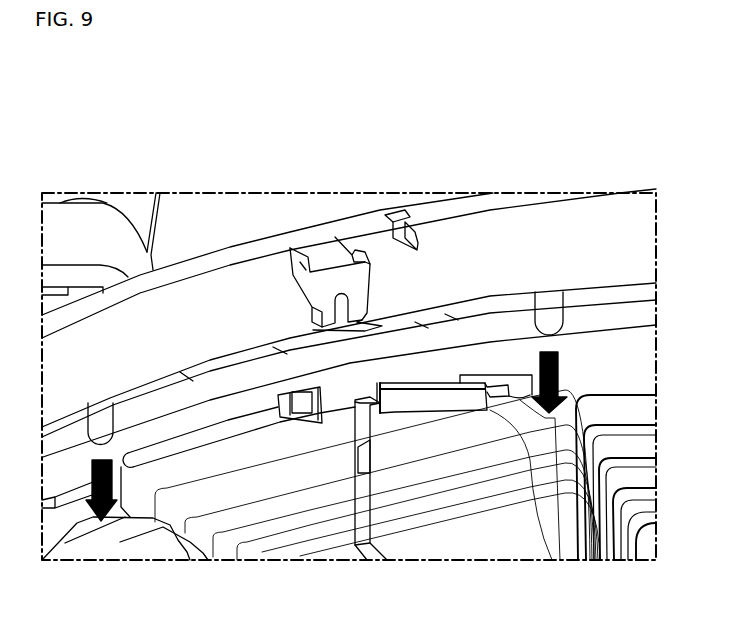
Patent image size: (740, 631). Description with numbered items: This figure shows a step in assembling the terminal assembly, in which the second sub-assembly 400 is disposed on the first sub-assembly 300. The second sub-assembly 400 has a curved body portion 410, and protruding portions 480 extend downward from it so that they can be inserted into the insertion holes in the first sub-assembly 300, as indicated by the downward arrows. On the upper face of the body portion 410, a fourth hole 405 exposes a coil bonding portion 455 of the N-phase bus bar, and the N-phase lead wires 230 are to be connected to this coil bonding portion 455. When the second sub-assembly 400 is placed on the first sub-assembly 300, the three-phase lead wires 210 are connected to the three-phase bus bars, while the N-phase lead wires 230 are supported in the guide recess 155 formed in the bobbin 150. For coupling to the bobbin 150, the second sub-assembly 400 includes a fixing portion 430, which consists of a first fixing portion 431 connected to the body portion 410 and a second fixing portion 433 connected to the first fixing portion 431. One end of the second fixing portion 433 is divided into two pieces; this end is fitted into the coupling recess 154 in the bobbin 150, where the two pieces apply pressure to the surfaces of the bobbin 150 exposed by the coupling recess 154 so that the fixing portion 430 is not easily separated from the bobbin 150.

The bobbin 150 is at (428, 413).
The coupling recess 154 is at (353, 420).
The guide recess 155 is at (555, 417).
The three-phase lead wires 210 is at (282, 412).
The N-phase lead wires 230 is at (497, 397).
The first sub-assembly 300 is at (620, 312).
The second sub-assembly 400 is at (317, 97).
The fourth hole 405 is at (393, 208).
The body portion 410 is at (203, 292).
The fixing portion 430 is at (340, 138).
The first fixing portion 431 is at (318, 252).
The second fixing portion 433 is at (343, 293).
The coil bonding portion 455 is at (420, 247).
The protruding portion 480 is at (107, 425).